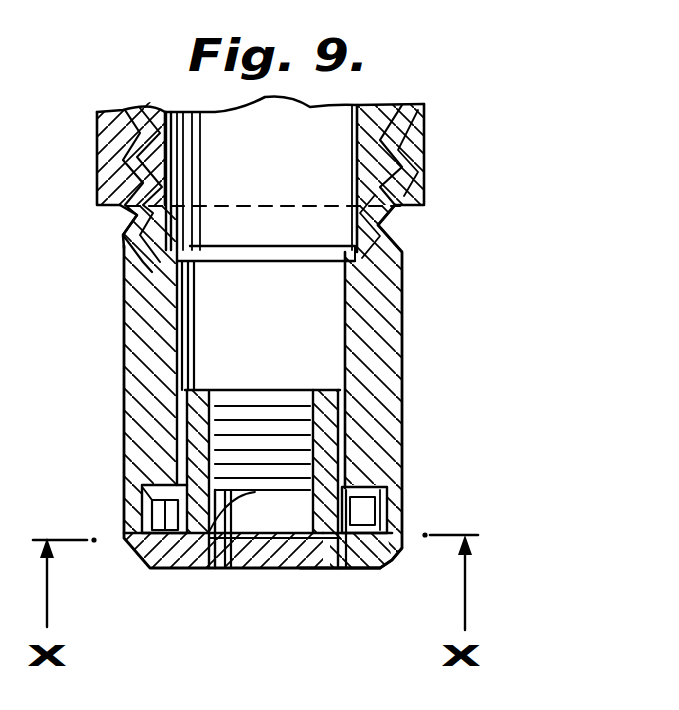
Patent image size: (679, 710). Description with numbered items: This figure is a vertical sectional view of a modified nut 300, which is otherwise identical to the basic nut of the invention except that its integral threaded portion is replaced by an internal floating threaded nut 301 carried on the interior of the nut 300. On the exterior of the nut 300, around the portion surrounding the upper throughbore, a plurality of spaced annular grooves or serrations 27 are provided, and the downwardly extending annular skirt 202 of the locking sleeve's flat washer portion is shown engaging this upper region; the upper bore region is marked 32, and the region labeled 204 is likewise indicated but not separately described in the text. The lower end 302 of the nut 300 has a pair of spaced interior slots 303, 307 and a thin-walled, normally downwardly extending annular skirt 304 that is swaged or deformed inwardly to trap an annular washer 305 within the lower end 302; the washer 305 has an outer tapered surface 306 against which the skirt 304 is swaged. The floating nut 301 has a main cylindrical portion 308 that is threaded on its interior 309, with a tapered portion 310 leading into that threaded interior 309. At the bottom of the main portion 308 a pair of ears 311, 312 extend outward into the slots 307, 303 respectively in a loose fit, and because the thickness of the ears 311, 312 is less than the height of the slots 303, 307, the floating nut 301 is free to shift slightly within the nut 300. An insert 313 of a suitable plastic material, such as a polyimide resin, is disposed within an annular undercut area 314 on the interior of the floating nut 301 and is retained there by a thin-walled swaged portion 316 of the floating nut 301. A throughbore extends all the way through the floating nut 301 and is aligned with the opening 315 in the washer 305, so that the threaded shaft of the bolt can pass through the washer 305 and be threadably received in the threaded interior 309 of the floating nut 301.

The nut 300 is at (154, 90).
The annular skirt 202 is at (75, 118).
The right coupling flange 204 is at (405, 135).
The bore 32 is at (260, 183).
The annular grooves or serrations 27 is at (122, 236).
The internal floating threaded nut 301 is at (340, 372).
The lower end 302 is at (124, 400).
The main cylindrical portion 308 is at (124, 367).
The tapered portion 310 is at (215, 387).
The threaded interior 309 is at (277, 432).
The ear 312 is at (360, 485).
The ear 311 is at (142, 487).
The interior slot 307 is at (150, 509).
The interior slot 303 is at (402, 455).
The annular skirt 304 is at (413, 557).
The opening 315 is at (213, 577).
The annular washer 305 is at (337, 570).
The insert 313 is at (227, 570).
The annular undercut area 314 is at (322, 492).
The swaged portion 316 is at (325, 537).
The outer tapered surface 306 is at (360, 570).